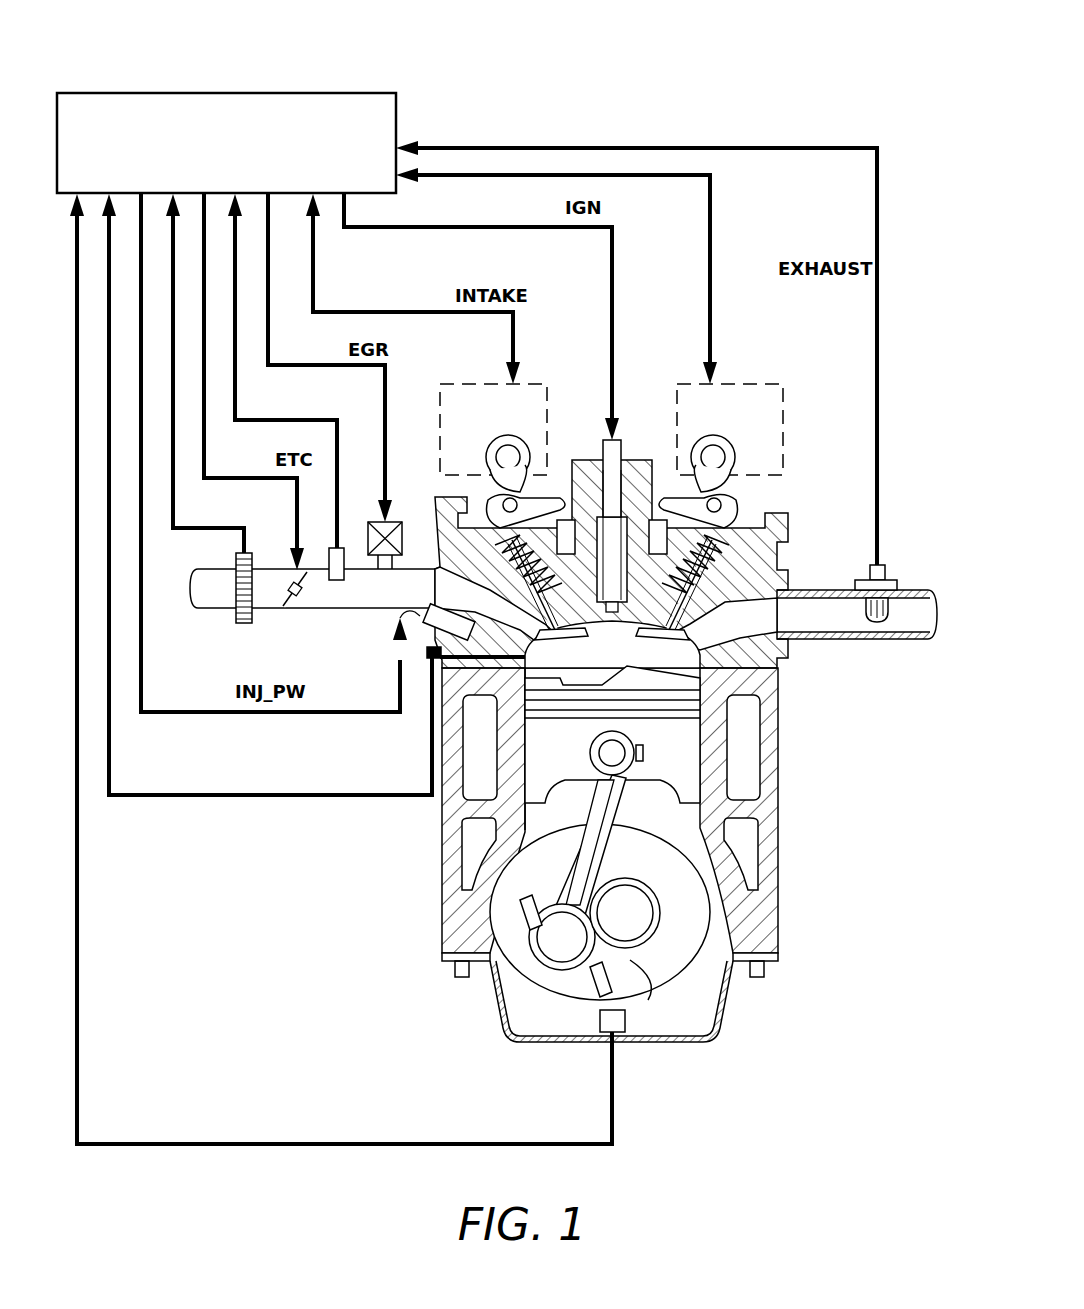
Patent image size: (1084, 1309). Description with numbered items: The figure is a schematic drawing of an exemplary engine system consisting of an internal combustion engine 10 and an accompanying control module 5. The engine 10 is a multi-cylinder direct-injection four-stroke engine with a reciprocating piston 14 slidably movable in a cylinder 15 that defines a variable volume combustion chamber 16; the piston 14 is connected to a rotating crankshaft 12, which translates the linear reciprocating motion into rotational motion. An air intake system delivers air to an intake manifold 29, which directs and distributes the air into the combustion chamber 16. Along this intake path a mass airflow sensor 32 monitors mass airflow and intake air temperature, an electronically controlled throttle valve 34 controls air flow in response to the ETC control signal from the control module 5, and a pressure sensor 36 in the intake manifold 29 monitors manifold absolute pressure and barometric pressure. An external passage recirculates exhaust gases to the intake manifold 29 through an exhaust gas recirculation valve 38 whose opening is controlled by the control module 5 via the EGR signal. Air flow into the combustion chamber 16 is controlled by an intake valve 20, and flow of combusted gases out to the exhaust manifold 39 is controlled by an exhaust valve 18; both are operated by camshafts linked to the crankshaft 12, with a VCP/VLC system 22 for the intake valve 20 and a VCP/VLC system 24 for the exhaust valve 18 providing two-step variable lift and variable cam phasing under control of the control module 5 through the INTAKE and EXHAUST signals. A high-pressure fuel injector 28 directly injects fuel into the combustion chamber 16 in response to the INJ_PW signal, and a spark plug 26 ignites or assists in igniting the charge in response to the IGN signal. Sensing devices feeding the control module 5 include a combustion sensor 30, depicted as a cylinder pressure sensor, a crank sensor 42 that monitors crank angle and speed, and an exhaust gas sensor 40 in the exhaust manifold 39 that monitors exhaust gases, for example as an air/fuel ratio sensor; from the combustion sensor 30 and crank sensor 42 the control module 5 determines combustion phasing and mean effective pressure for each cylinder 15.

The control module 5 is at (345, 88).
The internal combustion engine 10 is at (655, 682).
The crankshaft 12 is at (683, 985).
The piston 14 is at (612, 734).
The cylinder 15 is at (700, 683).
The combustion chamber 16 is at (612, 647).
The exhaust valve 18 is at (688, 628).
The intake valve 20 is at (510, 624).
The intake VCP/VLC system 22 is at (537, 382).
The exhaust VCP/VLC system 24 is at (786, 448).
The spark plug 26 is at (626, 440).
The fuel injector 28 is at (402, 622).
The intake manifold 29 is at (418, 567).
The combustion sensor 30 is at (430, 660).
The mass airflow sensor 32 is at (240, 623).
The throttle valve 34 is at (286, 610).
The pressure sensor 36 is at (336, 582).
The exhaust gas recirculation valve 38 is at (376, 557).
The exhaust manifold 39 is at (805, 589).
The exhaust gas sensor 40 is at (886, 574).
The crank sensor 42 is at (597, 1035).